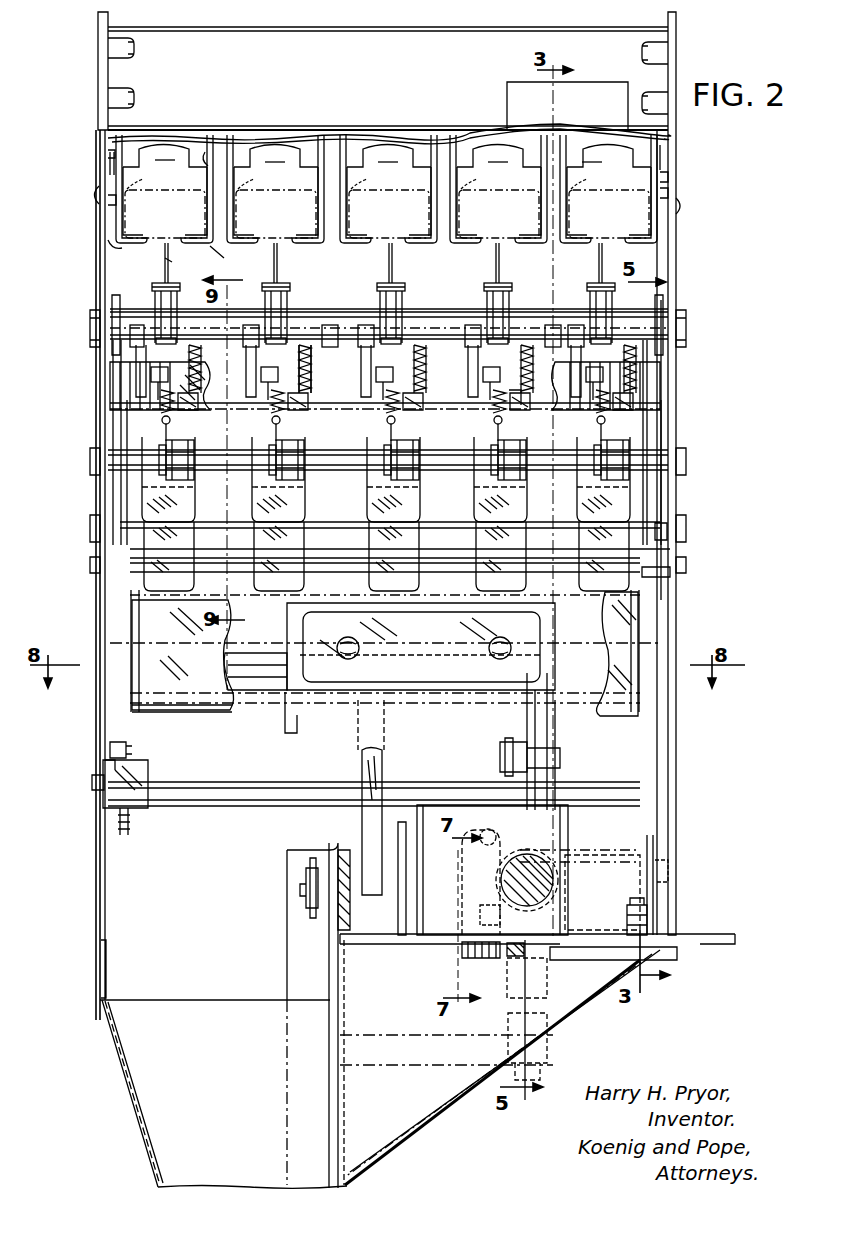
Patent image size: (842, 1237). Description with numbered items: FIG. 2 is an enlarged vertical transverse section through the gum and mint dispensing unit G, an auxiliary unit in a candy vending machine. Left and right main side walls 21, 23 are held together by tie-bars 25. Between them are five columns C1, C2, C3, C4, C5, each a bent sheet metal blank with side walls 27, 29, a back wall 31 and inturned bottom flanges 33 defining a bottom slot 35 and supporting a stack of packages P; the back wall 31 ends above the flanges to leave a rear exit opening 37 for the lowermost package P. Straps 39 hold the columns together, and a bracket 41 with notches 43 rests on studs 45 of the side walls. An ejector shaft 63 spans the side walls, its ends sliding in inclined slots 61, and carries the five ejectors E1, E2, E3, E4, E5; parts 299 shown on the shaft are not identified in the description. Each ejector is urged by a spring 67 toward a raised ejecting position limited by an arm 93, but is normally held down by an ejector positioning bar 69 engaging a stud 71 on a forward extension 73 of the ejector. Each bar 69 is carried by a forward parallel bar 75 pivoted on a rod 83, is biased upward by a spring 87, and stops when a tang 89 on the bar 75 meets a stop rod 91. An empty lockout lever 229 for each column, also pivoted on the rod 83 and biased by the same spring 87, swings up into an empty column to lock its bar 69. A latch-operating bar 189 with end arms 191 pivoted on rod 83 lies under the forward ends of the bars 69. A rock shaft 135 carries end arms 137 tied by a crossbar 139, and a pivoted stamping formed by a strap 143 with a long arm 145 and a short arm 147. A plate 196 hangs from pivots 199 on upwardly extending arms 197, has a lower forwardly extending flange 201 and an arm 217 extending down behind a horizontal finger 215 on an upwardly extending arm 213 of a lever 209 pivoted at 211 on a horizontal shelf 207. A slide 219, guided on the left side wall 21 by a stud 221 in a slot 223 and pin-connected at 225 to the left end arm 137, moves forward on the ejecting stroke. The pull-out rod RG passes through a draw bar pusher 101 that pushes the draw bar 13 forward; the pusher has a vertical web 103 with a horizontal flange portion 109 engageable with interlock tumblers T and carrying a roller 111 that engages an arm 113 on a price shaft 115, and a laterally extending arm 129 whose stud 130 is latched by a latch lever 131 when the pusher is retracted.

The left main side wall 21 is at (99, 109).
The right main side wall 23 is at (676, 222).
The tie-bar 25 is at (236, 33).
The back wall 31 is at (110, 138).
The strap 39 is at (430, 136).
The gum and mint dispensing apparatus G is at (664, 160).
The rear exit opening 37 is at (118, 183).
The column C1 is at (165, 153).
The column C2 is at (273, 153).
The column C3 is at (386, 153).
The column C4 is at (496, 153).
The column C5 is at (590, 153).
The package P is at (168, 192).
The side wall 29 is at (212, 158).
The side wall 27 is at (110, 163).
The bracket 41 is at (108, 152).
The notch 43 is at (110, 202).
The stud 45 is at (92, 196).
The inturned bottom flange 33 is at (110, 250).
The bottom slot 35 is at (178, 263).
The empty lockout lever 229 is at (613, 425).
The ejector E1 is at (155, 285).
The ejector E2 is at (282, 285).
The ejector E3 is at (382, 283).
The ejector E4 is at (490, 286).
The ejector E5 is at (594, 284).
The stud 71 is at (262, 312).
The forward extension 73 is at (486, 304).
The ejector shaft 63 is at (328, 310).
The collar 299 is at (357, 330).
The front-to-rear slot 61 is at (98, 348).
The ejector positioning bar 69 is at (258, 388).
The spring 67 is at (311, 375).
The spring 87 is at (388, 429).
The arm 93 is at (505, 412).
The latch-operating bar 189 is at (209, 410).
The end arm 191 is at (113, 430).
The forward rod 83 is at (322, 470).
The forward parallel bar 75 is at (190, 500).
The pivot 199 is at (92, 525).
The tang 89 is at (182, 545).
The stop rod 91 is at (436, 562).
The upwardly extending arm 197 is at (92, 560).
The end arm 137 is at (131, 600).
The plate 196 is at (178, 712).
The forwardly extending flange 201 is at (222, 712).
The rock shaft 135 is at (262, 655).
The strap 143 is at (416, 660).
The short arm 147 is at (290, 733).
The arm 217 is at (362, 762).
The crossbar 139 is at (206, 792).
The pin connection 225 is at (128, 748).
The slide 219 is at (104, 800).
The stud 221 is at (92, 782).
The slot 223 is at (104, 765).
The horizontal finger 215 is at (420, 804).
The upwardly extending arm 213 is at (398, 878).
The long arm 145 is at (548, 816).
The pull-out rod RG is at (504, 868).
The draw bar pusher 101 is at (466, 880).
The lever 209 is at (480, 915).
The laterally extending arm 129 is at (600, 852).
The latch lever 131 is at (656, 840).
The stud 130 is at (670, 868).
The pivot 211 is at (650, 915).
The draw bar 13 is at (704, 933).
The interlock tumblers T is at (458, 952).
The horizontal shelf 207 is at (394, 944).
The horizontal flange portion 109 is at (456, 970).
The vertical web 103 is at (540, 956).
The roller 111 is at (548, 996).
The arm 113 is at (506, 1013).
The price shaft 115 is at (424, 1034).